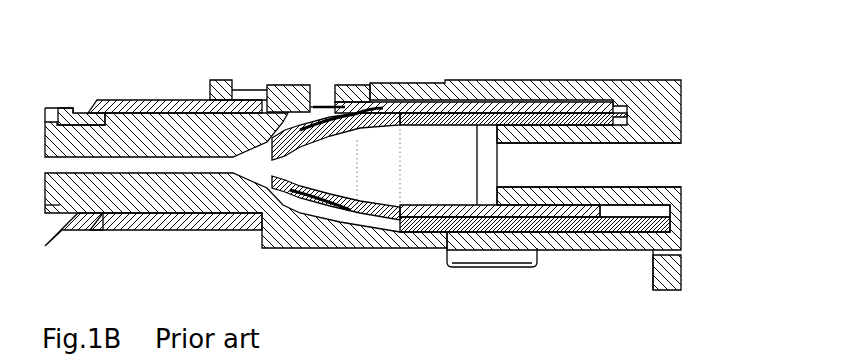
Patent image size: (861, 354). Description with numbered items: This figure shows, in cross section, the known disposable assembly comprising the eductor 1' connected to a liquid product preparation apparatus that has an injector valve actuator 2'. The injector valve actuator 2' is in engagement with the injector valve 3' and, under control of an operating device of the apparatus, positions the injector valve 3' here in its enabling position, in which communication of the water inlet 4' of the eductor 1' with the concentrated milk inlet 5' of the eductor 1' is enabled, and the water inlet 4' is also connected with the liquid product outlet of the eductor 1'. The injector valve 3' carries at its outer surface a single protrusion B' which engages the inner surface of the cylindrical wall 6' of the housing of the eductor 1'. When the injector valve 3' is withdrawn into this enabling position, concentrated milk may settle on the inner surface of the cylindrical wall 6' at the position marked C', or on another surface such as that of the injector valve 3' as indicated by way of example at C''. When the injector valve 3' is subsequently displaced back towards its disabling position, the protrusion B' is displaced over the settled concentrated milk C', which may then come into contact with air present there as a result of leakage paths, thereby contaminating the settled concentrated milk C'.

The eductor 1' is at (525, 146).
The injector valve actuator 2' is at (535, 223).
The injector valve 3' is at (336, 216).
The water inlet 4' is at (602, 121).
The concentrated milk inlet 5' is at (318, 62).
The cylindrical wall 6' is at (502, 112).
The protrusion B' is at (394, 63).
The settled concentrated milk C' is at (334, 71).
The settled concentrated milk C'' is at (328, 54).